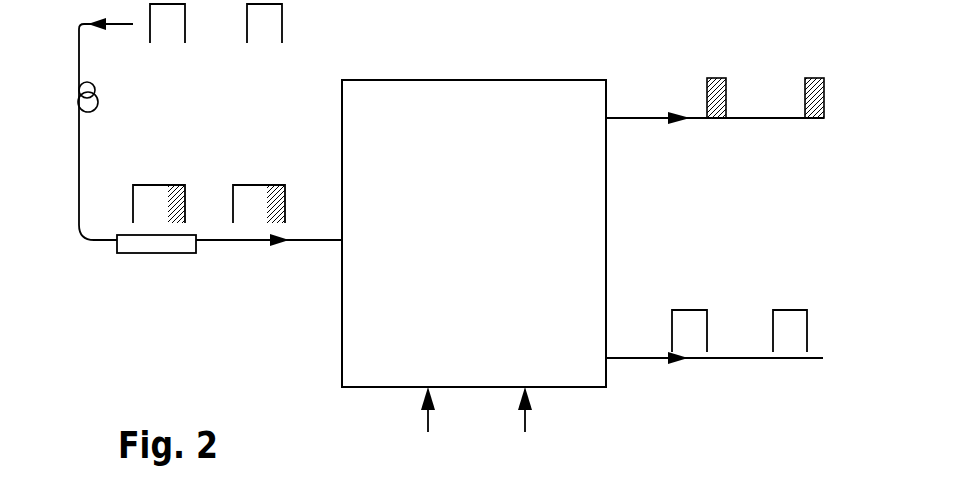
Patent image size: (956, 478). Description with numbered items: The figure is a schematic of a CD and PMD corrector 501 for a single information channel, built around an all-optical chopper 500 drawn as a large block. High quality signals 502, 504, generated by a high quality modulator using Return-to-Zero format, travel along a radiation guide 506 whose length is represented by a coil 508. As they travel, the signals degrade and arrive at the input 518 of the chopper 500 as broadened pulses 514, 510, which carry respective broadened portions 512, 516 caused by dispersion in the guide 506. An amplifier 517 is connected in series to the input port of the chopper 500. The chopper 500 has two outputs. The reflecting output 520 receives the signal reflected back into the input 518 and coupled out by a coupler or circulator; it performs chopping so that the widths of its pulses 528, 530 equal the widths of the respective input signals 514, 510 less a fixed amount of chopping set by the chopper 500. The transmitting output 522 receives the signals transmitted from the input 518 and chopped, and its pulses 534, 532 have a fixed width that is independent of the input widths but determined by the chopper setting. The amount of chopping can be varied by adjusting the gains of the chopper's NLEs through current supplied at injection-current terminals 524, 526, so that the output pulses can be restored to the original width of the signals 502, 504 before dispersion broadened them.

The chopper 500 is at (618, 378).
The CD and PMD corrector 501 is at (495, 52).
The high quality signal 502 is at (160, 6).
The high quality signal 504 is at (257, 6).
The radiation guide 506 is at (79, 65).
The coil 508 is at (96, 106).
The broadened pulse 510 is at (150, 185).
The broadened portion 512 is at (175, 212).
The broadened pulse 514 is at (242, 185).
The broadened portion 516 is at (262, 194).
The amplifier 517 is at (170, 254).
The input 518 is at (233, 242).
The reflecting output 520 is at (702, 120).
The transmitting output 522 is at (753, 360).
The injection-current terminal 524 is at (428, 432).
The injection-current terminal 526 is at (525, 428).
The pulse 528 is at (805, 90).
The pulse 530 is at (726, 100).
The pulse 532 is at (792, 310).
The pulse 534 is at (703, 310).